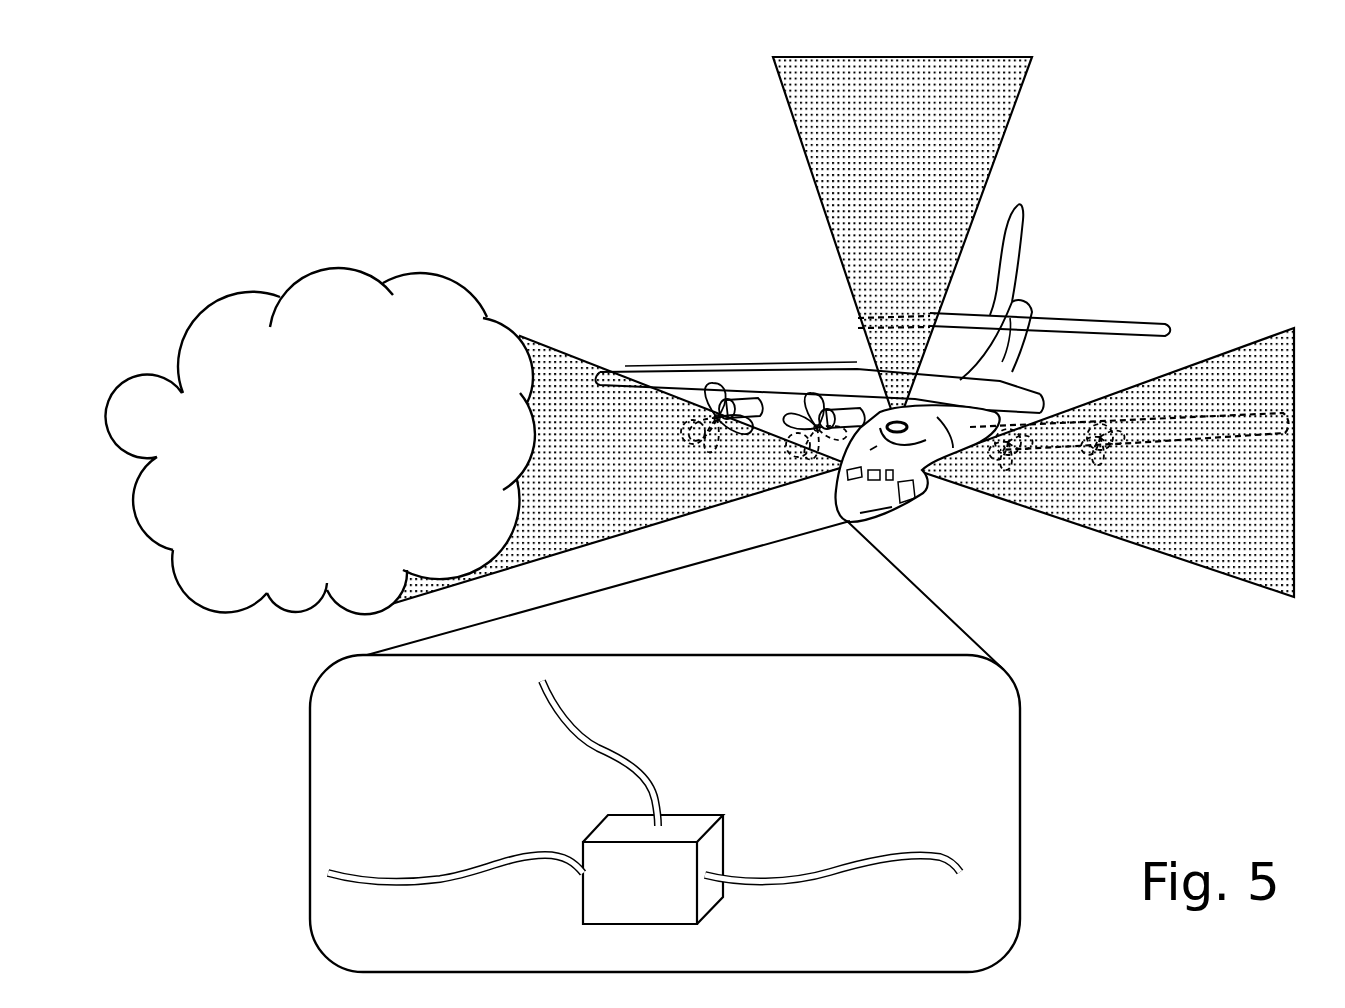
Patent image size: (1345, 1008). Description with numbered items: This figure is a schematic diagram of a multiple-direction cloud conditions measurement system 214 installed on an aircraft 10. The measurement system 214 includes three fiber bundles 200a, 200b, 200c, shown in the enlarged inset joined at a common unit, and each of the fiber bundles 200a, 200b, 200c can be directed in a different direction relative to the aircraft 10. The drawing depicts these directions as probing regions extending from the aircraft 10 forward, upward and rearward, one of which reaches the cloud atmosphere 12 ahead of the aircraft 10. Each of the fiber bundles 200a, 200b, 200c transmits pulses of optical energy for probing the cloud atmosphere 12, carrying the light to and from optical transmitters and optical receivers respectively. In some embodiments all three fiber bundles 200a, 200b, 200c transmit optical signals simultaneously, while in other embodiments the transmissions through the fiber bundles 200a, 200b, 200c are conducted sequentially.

The aircraft 10 is at (1160, 228).
The cloud atmosphere 12 is at (357, 450).
The fiber bundle 200a is at (407, 877).
The fiber bundle 200b is at (610, 748).
The fiber bundle 200c is at (868, 852).
The multiple-direction cloud conditions measurement system 214 is at (790, 746).